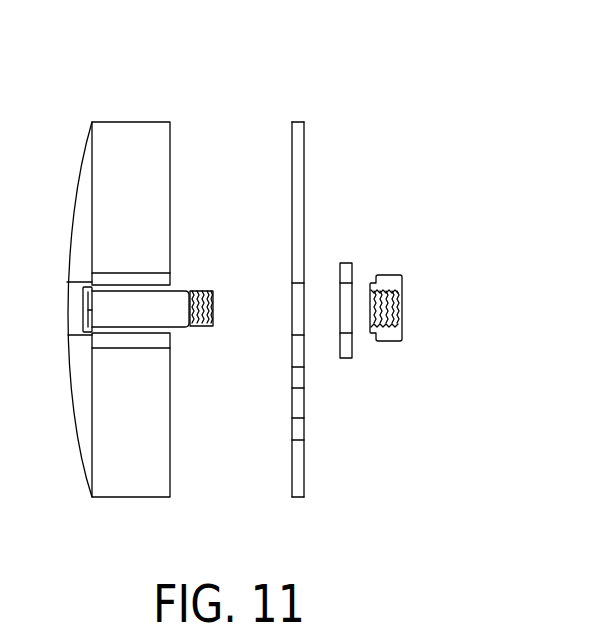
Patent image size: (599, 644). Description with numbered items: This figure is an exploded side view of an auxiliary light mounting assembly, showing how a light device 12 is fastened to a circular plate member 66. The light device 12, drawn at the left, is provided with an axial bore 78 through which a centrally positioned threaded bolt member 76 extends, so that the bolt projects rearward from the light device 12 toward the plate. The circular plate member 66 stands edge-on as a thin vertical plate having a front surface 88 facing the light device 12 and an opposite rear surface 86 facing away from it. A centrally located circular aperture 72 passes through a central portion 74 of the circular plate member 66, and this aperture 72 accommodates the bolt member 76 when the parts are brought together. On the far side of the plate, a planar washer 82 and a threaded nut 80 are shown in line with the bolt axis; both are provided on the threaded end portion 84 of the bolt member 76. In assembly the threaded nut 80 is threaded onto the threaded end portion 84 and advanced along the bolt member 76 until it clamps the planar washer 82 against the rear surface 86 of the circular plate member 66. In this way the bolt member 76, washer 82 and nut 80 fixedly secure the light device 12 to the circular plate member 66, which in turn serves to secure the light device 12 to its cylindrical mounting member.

The light device 12 is at (122, 113).
The circular plate member 66 is at (320, 324).
The centrally located circular aperture 72 is at (291, 303).
The central portion 74 is at (305, 295).
The centrally positioned threaded bolt member 76 is at (180, 291).
The axial bore 78 is at (174, 199).
The threaded nut 80 is at (397, 271).
The planar washer 82 is at (348, 362).
The threaded end portion 84 is at (208, 290).
The rear surface 86 is at (305, 468).
The front surface 88 is at (291, 476).